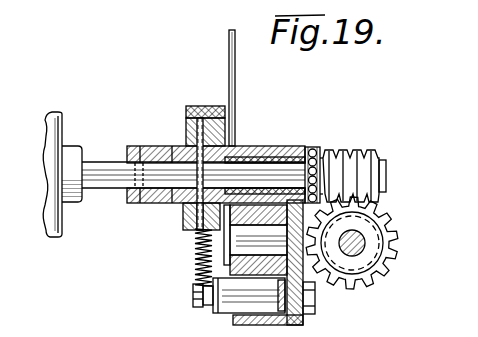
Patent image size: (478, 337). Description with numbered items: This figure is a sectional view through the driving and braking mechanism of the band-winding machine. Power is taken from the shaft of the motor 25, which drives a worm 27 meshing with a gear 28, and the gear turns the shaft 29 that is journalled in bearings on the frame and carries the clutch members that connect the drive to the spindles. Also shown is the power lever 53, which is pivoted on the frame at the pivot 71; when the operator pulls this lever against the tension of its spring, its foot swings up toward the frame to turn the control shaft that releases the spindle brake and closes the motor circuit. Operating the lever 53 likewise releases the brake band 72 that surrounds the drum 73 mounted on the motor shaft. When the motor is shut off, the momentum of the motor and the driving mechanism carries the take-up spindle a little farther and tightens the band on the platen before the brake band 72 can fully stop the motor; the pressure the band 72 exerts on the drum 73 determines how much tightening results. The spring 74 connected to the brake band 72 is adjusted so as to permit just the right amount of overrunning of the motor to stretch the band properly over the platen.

The motor 25 is at (52, 124).
The worm 27 is at (372, 150).
The gear 28 is at (390, 222).
The shaft 29 is at (358, 250).
The power lever 53 is at (236, 76).
The pivot 71 is at (236, 240).
The brake band 72 is at (197, 106).
The drum 73 is at (226, 121).
The spring 74 is at (197, 262).